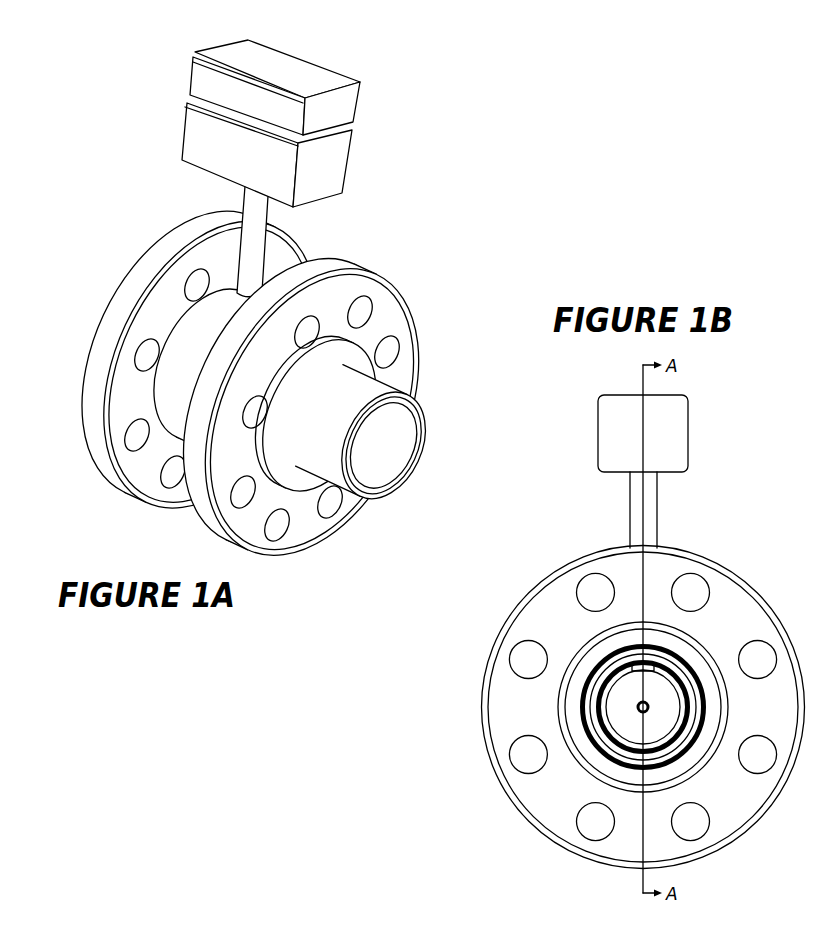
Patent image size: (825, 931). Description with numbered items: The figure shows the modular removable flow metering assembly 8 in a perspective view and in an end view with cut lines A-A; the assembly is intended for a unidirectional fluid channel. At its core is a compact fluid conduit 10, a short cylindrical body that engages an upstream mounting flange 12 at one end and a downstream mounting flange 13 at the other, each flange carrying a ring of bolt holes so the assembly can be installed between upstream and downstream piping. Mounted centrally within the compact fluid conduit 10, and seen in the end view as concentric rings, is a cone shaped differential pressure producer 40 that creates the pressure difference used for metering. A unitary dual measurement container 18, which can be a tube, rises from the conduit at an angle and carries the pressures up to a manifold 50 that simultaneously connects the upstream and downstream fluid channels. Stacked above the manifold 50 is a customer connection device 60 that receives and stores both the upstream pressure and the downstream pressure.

In FIG. 1A, the modular removable flow metering assembly 8 is at (472, 94).
In FIG. 1A, the compact fluid conduit 10 is at (163, 400).
In FIG. 1A, the upstream mounting flange 12 is at (193, 238).
In FIG. 1A, the downstream mounting flange 13 is at (327, 272).
In FIG. 1B, the downstream mounting flange 13 is at (547, 610).
In FIG. 1A, the unitary dual measurement container 18 is at (246, 212).
In FIG. 1B, the unitary dual measurement container 18 is at (657, 513).
In FIG. 1B, the cone shaped differential pressure producer 40 is at (670, 673).
In FIG. 1A, the manifold 50 is at (332, 168).
In FIG. 1B, the manifold 50 is at (688, 434).
In FIG. 1A, the customer connection device 60 is at (340, 108).